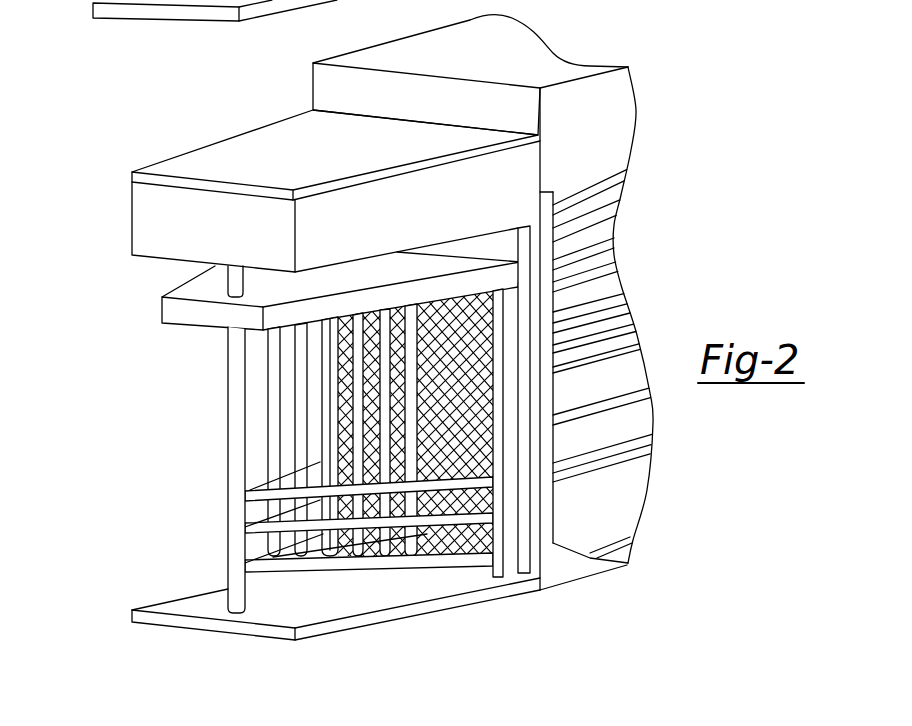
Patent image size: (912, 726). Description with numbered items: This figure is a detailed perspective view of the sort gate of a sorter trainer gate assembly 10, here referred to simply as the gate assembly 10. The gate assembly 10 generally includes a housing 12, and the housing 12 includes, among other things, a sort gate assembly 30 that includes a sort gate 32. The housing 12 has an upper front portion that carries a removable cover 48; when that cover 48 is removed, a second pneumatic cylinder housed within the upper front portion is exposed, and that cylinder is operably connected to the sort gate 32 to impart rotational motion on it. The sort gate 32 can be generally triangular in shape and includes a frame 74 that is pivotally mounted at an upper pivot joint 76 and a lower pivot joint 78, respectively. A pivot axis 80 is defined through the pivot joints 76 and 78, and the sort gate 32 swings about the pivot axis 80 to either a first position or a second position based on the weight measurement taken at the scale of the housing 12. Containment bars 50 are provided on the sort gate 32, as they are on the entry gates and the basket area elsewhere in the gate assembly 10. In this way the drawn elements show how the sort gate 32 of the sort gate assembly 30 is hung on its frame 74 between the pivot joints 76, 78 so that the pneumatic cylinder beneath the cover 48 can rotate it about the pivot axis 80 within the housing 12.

The sorter trainer gate assembly 10 is at (742, 108).
The housing 12 is at (548, 56).
The sort gate assembly 30 is at (158, 241).
The sort gate 32 is at (228, 474).
The removable cover 48 is at (211, 160).
The containment bars 50 is at (603, 274).
The frame 74 is at (372, 304).
The upper pivot joint 76 is at (153, 259).
The lower pivot joint 78 is at (230, 613).
The pivot axis 80 is at (238, 388).